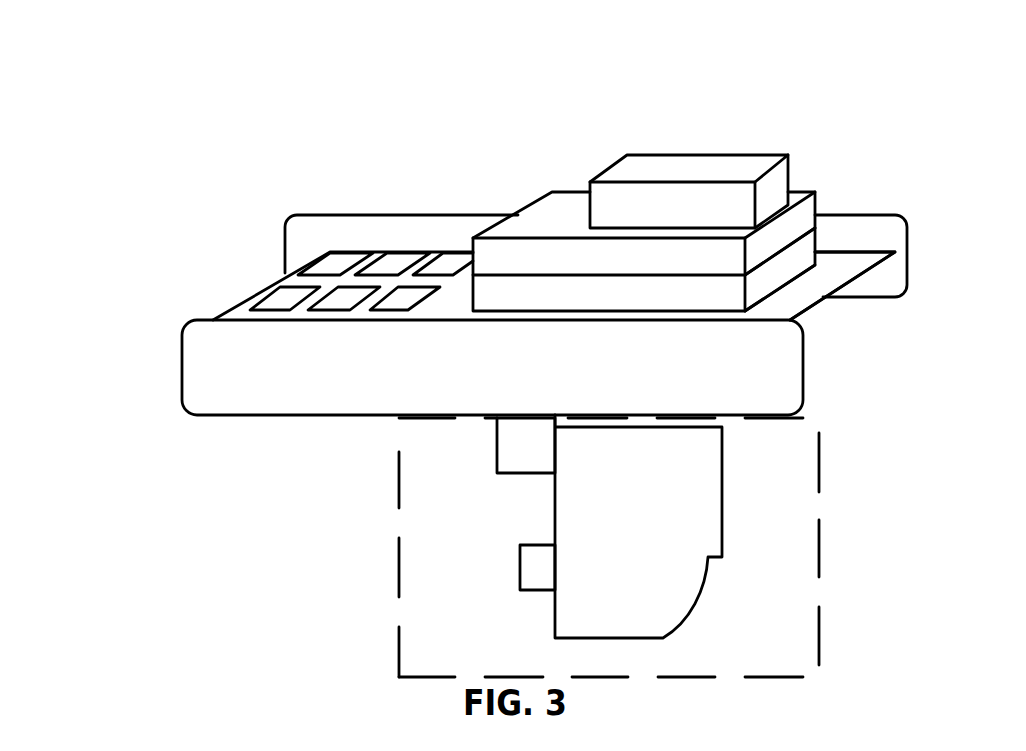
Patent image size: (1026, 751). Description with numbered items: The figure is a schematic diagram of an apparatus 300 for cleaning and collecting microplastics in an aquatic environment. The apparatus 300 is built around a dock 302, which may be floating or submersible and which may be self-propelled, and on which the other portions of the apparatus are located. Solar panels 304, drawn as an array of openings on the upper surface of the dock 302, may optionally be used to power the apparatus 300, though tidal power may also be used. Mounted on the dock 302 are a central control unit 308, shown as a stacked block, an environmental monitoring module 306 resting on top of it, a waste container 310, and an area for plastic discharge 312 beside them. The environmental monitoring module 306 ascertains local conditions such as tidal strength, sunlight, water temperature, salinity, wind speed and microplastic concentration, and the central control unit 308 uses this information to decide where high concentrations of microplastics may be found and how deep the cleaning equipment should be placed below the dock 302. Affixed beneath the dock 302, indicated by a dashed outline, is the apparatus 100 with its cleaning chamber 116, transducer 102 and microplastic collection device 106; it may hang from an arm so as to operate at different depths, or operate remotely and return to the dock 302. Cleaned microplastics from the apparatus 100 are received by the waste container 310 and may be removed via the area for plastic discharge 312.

The apparatus 300 is at (91, 61).
The dock 302 is at (305, 422).
The solar panels 304 is at (267, 296).
The environmental monitoring module 306 is at (787, 171).
The central control unit 308 is at (557, 215).
The waste container 310 is at (811, 228).
The area for plastic discharge 312 is at (833, 255).
The apparatus 100 is at (822, 548).
The transducer 102 is at (516, 581).
The microplastic collection device 106 is at (493, 448).
The cleaning chamber 116 is at (683, 583).